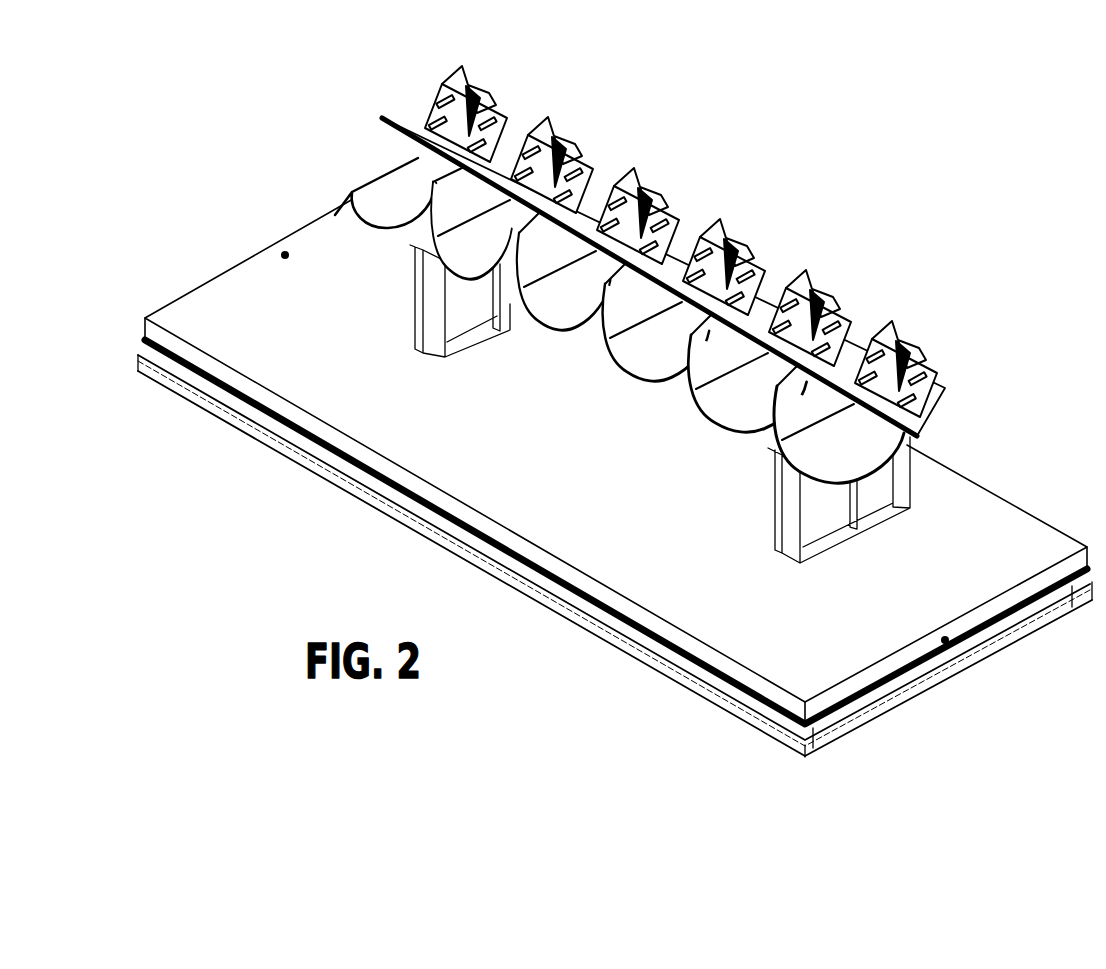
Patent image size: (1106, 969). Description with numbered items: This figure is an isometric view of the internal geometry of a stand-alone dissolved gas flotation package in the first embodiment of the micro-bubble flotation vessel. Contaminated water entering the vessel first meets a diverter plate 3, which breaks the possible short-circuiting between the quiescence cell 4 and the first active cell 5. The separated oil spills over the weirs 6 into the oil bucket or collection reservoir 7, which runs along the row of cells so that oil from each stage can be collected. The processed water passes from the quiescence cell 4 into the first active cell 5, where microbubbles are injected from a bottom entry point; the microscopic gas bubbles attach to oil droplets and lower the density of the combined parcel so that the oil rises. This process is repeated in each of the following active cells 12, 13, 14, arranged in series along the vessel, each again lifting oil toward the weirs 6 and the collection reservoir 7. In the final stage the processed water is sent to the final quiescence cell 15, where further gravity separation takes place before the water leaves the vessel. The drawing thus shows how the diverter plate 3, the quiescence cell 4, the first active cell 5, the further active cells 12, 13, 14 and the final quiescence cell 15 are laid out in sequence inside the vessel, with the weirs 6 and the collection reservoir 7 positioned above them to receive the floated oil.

The diverter plate 3 is at (385, 193).
The quiescence cell 4 is at (410, 232).
The first active cell 5 is at (487, 278).
The weirs 6 is at (462, 100).
The oil bucket or collection reservoir 7 is at (512, 150).
The active cell 12 is at (567, 330).
The active cell 13 is at (654, 378).
The active cell 14 is at (740, 428).
The final quiescence cell 15 is at (857, 465).